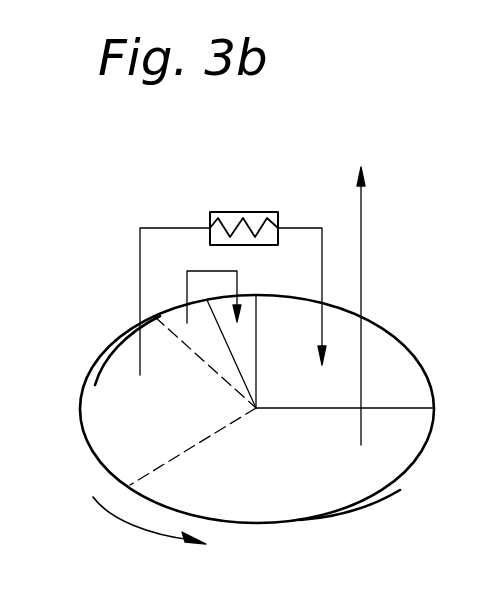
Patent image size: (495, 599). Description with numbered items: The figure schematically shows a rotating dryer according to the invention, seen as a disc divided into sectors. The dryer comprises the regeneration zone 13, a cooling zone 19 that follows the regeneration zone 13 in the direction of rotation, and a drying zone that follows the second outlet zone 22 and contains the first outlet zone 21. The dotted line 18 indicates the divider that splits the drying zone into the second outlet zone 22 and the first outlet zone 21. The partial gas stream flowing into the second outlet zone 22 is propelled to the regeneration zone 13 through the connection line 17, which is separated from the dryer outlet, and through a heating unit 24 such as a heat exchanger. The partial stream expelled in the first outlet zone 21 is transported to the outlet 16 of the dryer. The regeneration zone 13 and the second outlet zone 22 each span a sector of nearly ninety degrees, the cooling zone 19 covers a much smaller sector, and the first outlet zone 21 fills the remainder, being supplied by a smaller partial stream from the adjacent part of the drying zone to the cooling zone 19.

The regeneration zone 13 is at (397, 358).
The outlet 16 is at (362, 210).
The connection line 17 is at (163, 228).
The dotted line 18 is at (152, 472).
The cooling zone 19 is at (237, 282).
The first outlet zone 21 is at (353, 492).
The second outlet zone 22 is at (122, 362).
The heating unit 24 is at (240, 212).